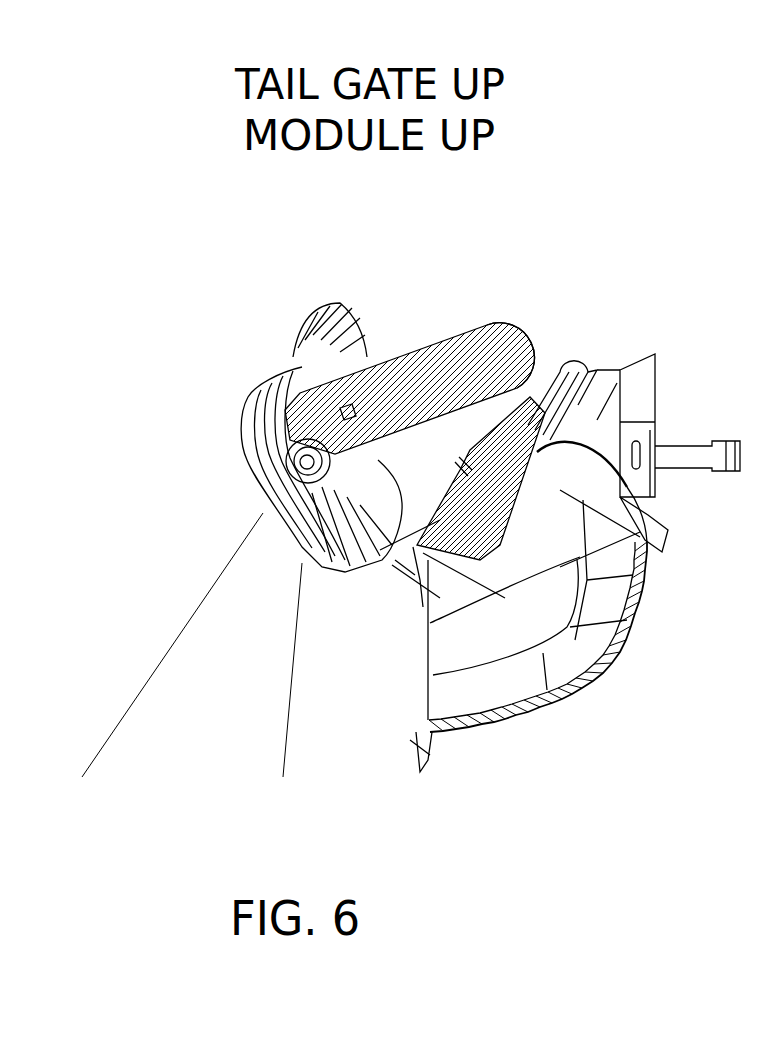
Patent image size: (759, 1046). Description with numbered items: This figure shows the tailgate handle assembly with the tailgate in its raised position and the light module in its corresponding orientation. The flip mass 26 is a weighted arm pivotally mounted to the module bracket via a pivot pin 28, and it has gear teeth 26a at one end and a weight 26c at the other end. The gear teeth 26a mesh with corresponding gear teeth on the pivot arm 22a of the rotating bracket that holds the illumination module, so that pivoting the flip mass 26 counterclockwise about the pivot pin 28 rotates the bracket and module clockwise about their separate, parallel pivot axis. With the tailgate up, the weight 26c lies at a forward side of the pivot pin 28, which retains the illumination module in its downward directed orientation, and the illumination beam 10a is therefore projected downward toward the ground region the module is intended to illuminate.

The illumination beam 10a is at (192, 656).
The flip mass 26 is at (405, 326).
The gear teeth 26a is at (310, 408).
The weight 26c is at (500, 357).
The pivot pin 28 is at (347, 412).
The pivot arm 22a is at (278, 472).